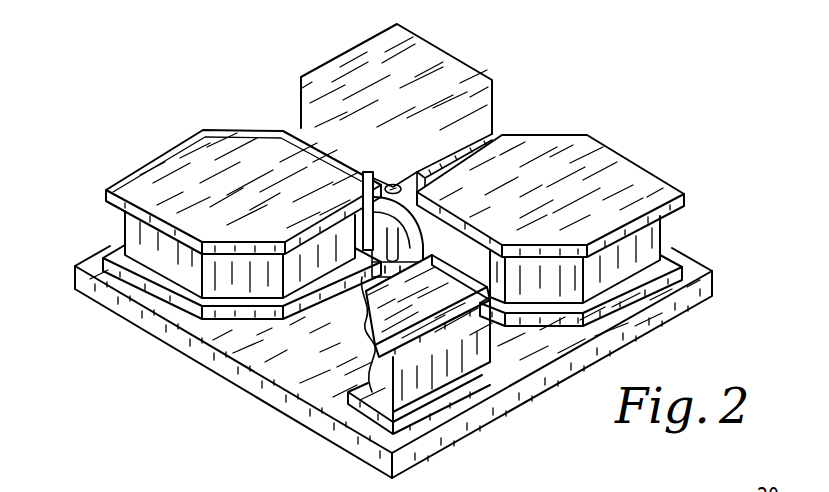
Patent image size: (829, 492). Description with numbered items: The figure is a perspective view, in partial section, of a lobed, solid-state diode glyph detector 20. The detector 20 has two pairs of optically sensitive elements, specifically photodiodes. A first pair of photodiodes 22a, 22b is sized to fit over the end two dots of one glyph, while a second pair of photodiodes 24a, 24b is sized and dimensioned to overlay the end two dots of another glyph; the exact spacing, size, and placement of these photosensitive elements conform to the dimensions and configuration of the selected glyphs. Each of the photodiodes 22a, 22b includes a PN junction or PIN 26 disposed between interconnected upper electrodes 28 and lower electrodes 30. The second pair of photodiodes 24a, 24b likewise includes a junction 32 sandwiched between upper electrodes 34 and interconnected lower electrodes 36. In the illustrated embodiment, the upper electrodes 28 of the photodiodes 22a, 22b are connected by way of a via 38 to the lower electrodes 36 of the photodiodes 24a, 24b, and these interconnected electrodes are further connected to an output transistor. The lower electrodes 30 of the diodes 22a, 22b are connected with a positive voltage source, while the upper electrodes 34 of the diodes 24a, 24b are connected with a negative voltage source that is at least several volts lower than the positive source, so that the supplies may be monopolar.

The glyph detector 20 is at (540, 95).
The photodiode 22a is at (318, 66).
The photodiode 22b is at (440, 363).
The photodiode 24a is at (155, 245).
The photodiode 24b is at (645, 243).
The PN junction 26 is at (418, 380).
The upper electrode 28 is at (462, 100).
The lower electrode 30 is at (320, 438).
The junction 32 is at (180, 276).
The upper electrode 34 is at (178, 183).
The lower electrode 36 is at (187, 274).
The via 38 is at (382, 283).